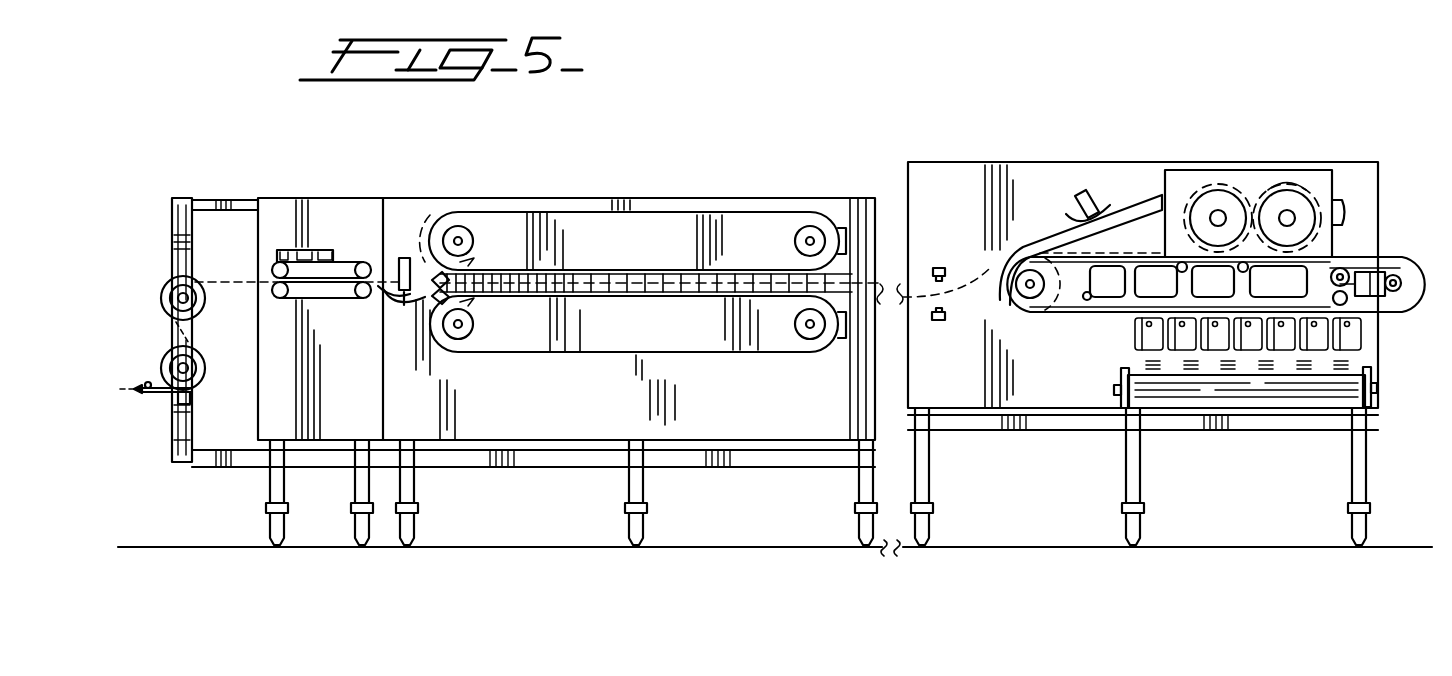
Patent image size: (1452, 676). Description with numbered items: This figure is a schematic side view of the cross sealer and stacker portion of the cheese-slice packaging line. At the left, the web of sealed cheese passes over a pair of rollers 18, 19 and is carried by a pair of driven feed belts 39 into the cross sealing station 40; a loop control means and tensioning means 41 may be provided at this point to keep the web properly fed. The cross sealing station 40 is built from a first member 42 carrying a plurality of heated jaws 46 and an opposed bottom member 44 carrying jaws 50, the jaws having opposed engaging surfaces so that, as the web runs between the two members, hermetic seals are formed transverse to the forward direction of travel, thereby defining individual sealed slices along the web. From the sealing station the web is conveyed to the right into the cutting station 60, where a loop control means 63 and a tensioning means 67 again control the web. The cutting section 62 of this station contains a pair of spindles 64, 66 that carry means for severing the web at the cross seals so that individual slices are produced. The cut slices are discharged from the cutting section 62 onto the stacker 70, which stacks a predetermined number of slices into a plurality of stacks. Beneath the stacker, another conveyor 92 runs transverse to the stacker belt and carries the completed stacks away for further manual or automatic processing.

The upper feed roller 18 is at (170, 303).
The lower feed roller 19 is at (170, 363).
The driven feed belts 39 is at (296, 302).
The cross sealing station 40 is at (542, 186).
The loop control means and tensioning means 41 is at (383, 292).
The first member 42 is at (667, 242).
The bottom member 44 is at (711, 325).
The heated jaws 46 is at (432, 268).
The jaws 50 is at (432, 290).
The cutting station 60 is at (1098, 150).
The cutting station 62 is at (1266, 157).
The loop control means 63 is at (946, 329).
The spindle 64 is at (1306, 198).
The spindle 66 is at (1218, 200).
The tensioning means 67 is at (1078, 205).
The stacker 70 is at (1380, 349).
The conveyor 92 is at (1157, 390).